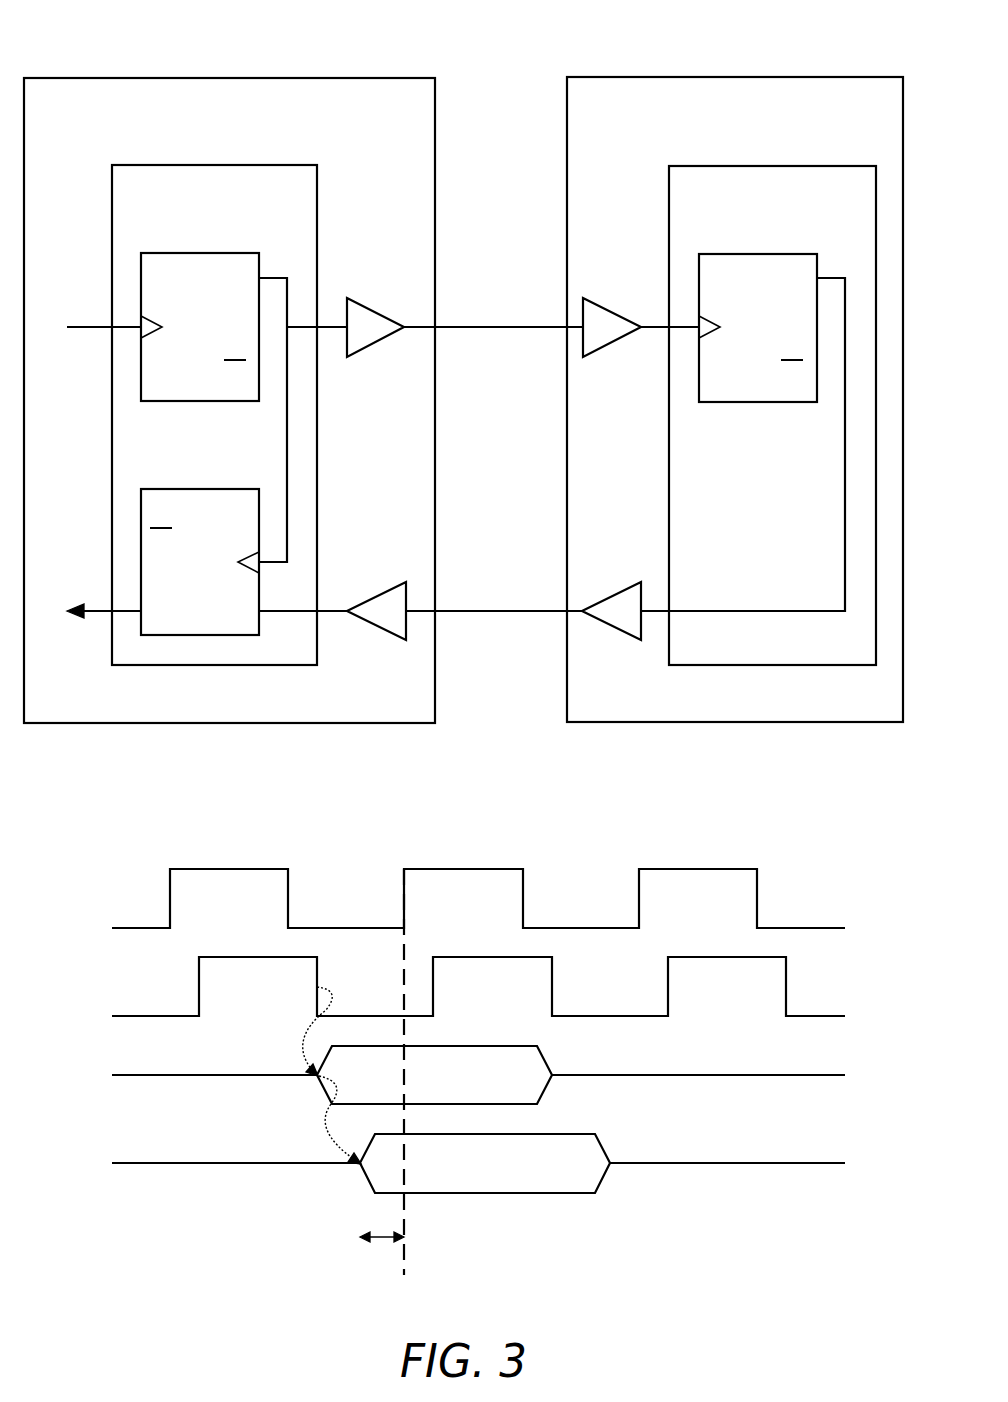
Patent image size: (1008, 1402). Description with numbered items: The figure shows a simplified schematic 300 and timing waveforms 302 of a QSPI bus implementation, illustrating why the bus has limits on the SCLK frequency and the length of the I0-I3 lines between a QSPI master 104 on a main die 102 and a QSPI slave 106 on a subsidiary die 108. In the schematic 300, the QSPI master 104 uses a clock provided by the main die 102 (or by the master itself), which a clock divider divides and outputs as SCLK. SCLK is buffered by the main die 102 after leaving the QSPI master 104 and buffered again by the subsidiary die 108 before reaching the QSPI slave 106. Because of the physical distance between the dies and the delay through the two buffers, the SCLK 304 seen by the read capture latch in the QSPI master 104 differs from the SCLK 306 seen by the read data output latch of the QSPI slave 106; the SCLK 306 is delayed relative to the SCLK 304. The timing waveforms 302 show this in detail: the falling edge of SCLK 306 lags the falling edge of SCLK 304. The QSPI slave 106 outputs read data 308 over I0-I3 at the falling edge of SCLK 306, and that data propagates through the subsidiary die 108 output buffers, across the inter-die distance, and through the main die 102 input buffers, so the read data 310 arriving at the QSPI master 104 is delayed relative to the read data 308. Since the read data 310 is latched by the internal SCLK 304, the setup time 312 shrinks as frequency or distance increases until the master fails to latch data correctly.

The simplified schematic 300 is at (144, 44).
The main die 102 is at (247, 113).
The QSPI master 104 is at (233, 200).
The QSPI slave 106 is at (792, 200).
The subsidiary die 108 is at (753, 113).
The timing waveforms 302 is at (144, 837).
The SCLK 304 is at (288, 413).
The SCLK 306 is at (657, 327).
The read data 308 is at (657, 611).
The read data 310 is at (332, 611).
The setup time 312 is at (382, 1242).